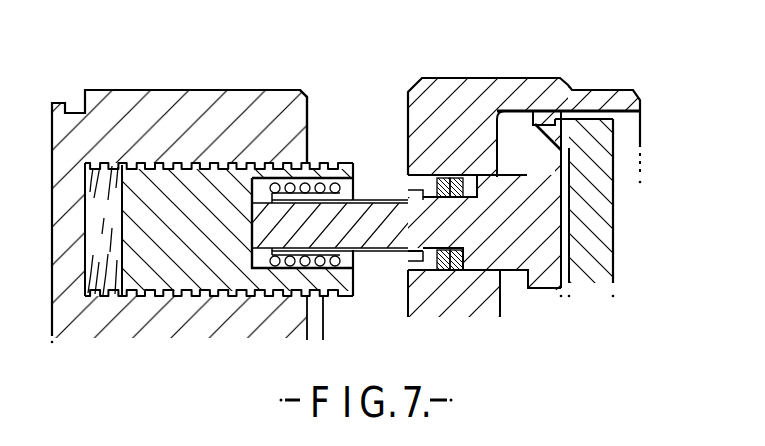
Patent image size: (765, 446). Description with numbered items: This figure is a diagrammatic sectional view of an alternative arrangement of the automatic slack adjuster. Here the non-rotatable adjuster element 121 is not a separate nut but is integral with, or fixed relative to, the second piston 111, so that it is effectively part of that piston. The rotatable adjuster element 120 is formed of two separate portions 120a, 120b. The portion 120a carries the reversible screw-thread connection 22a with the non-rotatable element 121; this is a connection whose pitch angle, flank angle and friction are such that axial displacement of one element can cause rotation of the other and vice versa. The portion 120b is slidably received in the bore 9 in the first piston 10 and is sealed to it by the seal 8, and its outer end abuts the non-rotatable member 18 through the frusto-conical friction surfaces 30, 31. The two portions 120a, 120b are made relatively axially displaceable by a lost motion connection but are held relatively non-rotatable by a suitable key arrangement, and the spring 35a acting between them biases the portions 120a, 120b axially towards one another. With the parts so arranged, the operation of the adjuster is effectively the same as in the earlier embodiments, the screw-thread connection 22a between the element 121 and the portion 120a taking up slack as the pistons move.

The first piston 10 is at (441, 93).
The sealing ring 8 is at (448, 177).
The bore 9 is at (472, 186).
The non-rotatable member 18 is at (591, 237).
The frusto-conical friction surface 30 is at (552, 171).
The frusto-conical friction surface 31 is at (560, 152).
The second piston 111 is at (262, 106).
The non-rotatable adjuster element 121 is at (178, 153).
The rotatable adjuster element 120 is at (366, 184).
The portion of rotatable adjuster element 120a is at (202, 294).
The portion of rotatable adjuster element 120b is at (477, 251).
The reversible screw-thread connection 22a is at (247, 300).
The spring 35a is at (332, 334).